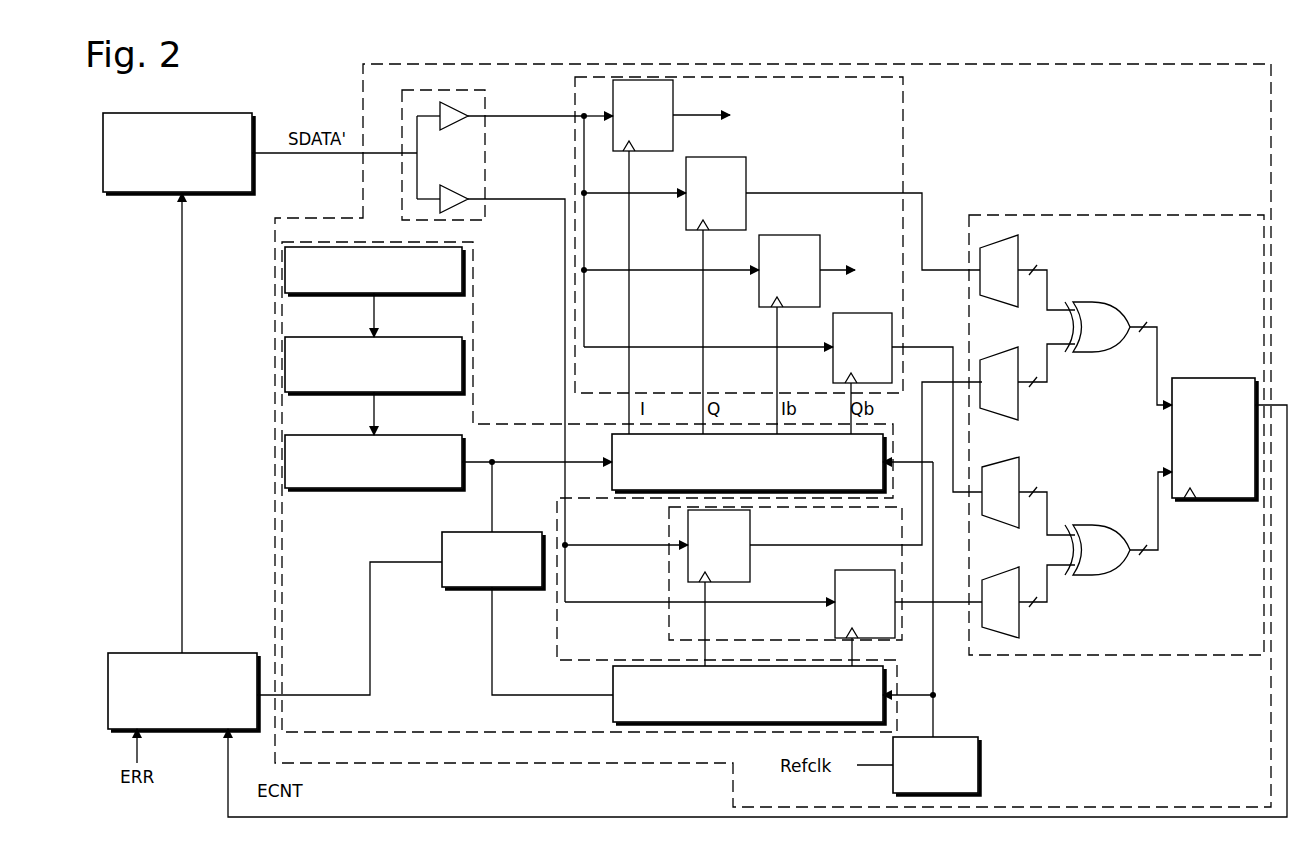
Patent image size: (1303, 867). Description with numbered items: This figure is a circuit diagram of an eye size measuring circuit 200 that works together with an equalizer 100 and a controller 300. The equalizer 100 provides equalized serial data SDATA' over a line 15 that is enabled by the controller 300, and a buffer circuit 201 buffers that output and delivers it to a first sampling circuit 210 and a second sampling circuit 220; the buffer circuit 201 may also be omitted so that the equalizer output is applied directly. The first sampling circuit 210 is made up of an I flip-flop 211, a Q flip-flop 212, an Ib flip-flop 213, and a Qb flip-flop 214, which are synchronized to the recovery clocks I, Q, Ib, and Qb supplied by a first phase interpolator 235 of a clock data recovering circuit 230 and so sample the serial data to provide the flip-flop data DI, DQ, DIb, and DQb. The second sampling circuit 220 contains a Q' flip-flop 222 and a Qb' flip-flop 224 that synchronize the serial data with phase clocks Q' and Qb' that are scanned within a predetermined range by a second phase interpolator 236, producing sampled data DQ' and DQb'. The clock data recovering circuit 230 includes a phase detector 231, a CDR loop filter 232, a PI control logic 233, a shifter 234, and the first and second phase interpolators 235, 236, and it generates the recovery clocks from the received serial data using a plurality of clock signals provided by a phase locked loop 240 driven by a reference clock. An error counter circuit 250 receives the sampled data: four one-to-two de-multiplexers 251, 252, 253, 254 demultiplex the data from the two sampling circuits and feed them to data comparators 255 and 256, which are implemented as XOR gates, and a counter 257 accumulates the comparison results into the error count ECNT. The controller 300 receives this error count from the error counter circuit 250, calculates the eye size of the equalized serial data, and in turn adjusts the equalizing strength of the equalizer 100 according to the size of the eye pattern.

The equalizer 100 is at (226, 113).
The enable signal line 15 is at (179, 423).
The eye size measuring circuit 200 is at (363, 86).
The buffer circuit 201 is at (485, 150).
The first sampling circuit 210 is at (769, 235).
The I flip-flop 211 is at (673, 128).
The Q flip-flop 212 is at (746, 205).
The Ib flip-flop 213 is at (820, 283).
The Qb flip-flop 214 is at (833, 364).
The second sampling circuit 220 is at (669, 615).
The Q' flip-flop 222 is at (750, 563).
The Qb' flip-flop 224 is at (835, 610).
The clock data recovering circuit 230 is at (473, 325).
The phase detector 231 is at (412, 297).
The CDR loop filter 232 is at (412, 396).
The PI control logic 233 is at (412, 492).
The shifter 234 is at (500, 532).
The first phase interpolator 235 is at (612, 438).
The second phase interpolator 236 is at (613, 706).
The phase locked loop 240 is at (978, 766).
The error counter circuit 250 is at (1190, 215).
The de-multiplexer 251 is at (1018, 245).
The de-multiplexer 252 is at (1018, 400).
The de-multiplexer 253 is at (1019, 467).
The de-multiplexer 254 is at (1019, 620).
The data comparator 255 is at (1097, 303).
The data comparator 256 is at (1101, 525).
The counter 257 is at (1215, 378).
The controller 300 is at (228, 653).